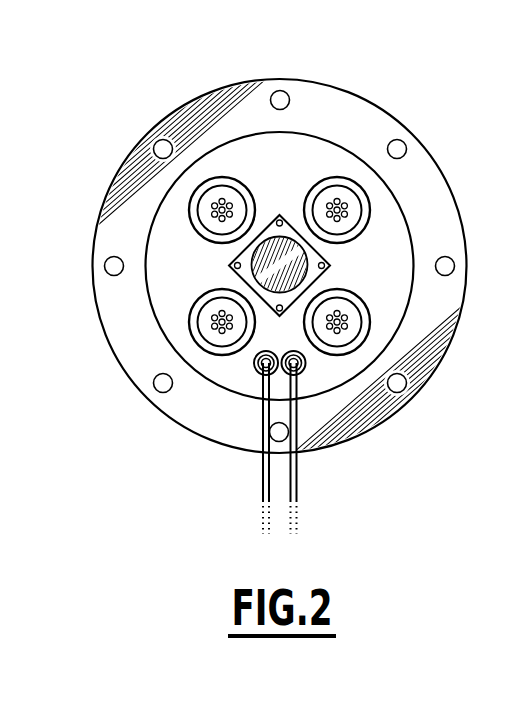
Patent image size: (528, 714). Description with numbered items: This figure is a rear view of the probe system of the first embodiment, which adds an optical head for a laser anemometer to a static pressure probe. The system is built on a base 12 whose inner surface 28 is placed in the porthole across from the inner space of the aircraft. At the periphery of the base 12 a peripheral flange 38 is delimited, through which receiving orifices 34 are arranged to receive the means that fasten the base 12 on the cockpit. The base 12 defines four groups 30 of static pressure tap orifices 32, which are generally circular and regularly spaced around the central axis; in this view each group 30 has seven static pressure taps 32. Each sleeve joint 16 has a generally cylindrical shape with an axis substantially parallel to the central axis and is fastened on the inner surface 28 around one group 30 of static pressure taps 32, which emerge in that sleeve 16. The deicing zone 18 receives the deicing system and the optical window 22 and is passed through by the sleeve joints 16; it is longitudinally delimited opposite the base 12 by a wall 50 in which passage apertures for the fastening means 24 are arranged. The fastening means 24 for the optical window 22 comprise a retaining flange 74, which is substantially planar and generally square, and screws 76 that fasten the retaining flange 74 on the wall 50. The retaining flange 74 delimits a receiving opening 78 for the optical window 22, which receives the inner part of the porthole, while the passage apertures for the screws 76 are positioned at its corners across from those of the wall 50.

The base 12 is at (128, 113).
The sleeve joints 16 is at (352, 331).
The deicing zone 18 is at (233, 153).
The optical window 22 is at (233, 270).
The fastening means for the optical window 24 is at (322, 256).
The inner surface 28 is at (337, 113).
The groups of static pressure tap orifices 30 is at (370, 324).
The static pressure tap orifices 32 is at (335, 343).
The receiving orifices 34 is at (157, 385).
The peripheral flange 38 is at (427, 182).
The wall 50 is at (262, 148).
The retaining flange 74 is at (318, 278).
The screws 76 is at (280, 318).
The receiving opening 78 is at (294, 214).